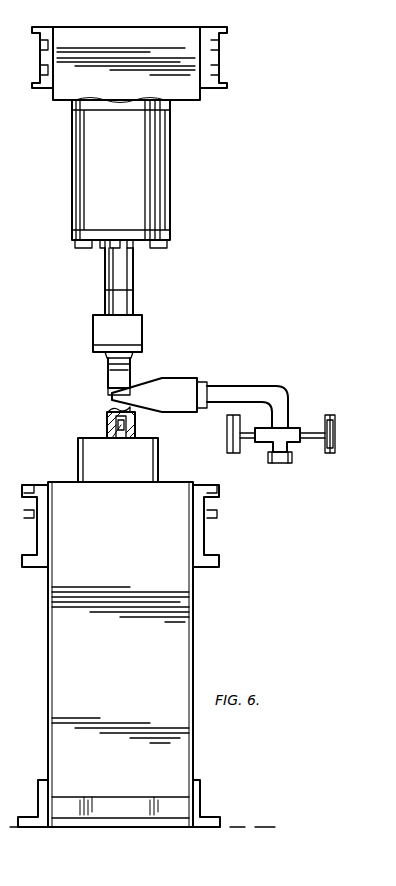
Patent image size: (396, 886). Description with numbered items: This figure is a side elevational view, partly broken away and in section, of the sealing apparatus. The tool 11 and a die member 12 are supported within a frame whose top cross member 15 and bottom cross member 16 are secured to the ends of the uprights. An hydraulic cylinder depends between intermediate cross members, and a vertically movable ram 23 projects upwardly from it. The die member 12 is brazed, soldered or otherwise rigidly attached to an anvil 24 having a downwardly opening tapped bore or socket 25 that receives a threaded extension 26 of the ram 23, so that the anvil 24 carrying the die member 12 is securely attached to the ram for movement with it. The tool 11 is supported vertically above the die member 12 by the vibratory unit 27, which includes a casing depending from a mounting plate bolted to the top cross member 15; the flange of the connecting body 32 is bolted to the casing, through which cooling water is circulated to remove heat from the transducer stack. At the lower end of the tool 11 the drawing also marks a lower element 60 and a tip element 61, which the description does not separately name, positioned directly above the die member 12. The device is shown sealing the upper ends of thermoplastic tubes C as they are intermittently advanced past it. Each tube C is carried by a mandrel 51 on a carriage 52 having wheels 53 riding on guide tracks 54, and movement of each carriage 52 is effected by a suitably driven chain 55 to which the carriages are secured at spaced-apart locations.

The top cross member 15 is at (40, 36).
The vibratory unit 27 is at (172, 208).
The connecting body 32 is at (133, 275).
The tool 11 is at (95, 335).
The upper die 60 is at (108, 380).
The die tip 61 is at (110, 405).
The die member 12 is at (107, 414).
The anvil 24 is at (107, 427).
The tapped bore or socket 25 is at (127, 427).
The threaded extension 26 is at (126, 440).
The ram 23 is at (90, 464).
The thermoplastic tube C is at (175, 378).
The mandrel 51 is at (250, 394).
The carriage 52 is at (292, 430).
The wheels 53 is at (227, 438).
The guide tracks 54 is at (332, 418).
The chain 55 is at (273, 463).
The bottom cross member 16 is at (40, 795).